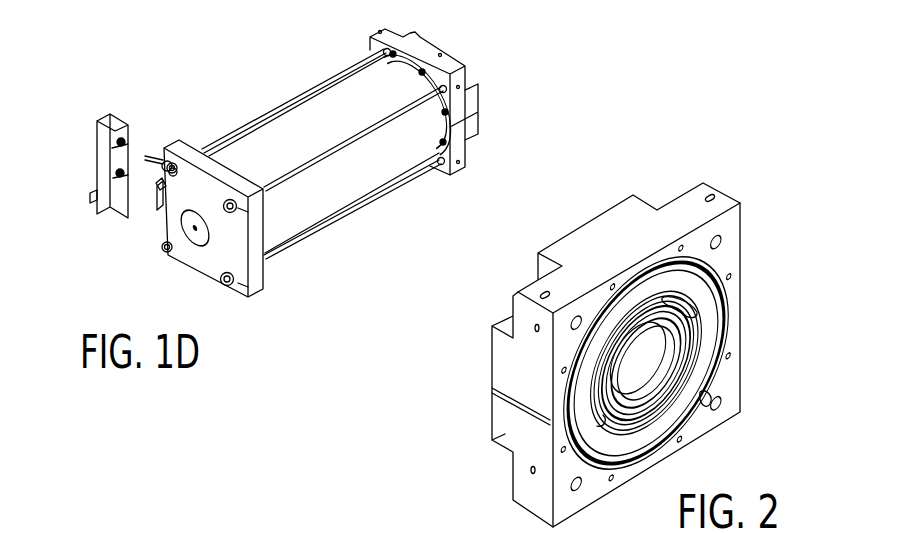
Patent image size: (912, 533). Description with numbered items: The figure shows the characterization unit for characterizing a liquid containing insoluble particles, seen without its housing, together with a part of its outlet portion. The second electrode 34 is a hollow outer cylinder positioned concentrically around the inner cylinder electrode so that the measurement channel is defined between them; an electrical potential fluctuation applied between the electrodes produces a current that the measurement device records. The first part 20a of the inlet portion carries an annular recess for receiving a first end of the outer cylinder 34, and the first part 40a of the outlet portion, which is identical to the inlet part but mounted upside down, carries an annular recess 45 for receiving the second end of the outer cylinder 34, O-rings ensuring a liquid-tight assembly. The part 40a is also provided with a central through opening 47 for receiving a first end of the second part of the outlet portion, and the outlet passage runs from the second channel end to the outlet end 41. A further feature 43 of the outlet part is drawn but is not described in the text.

In FIG. 1D, the first part of the inlet portion 20a is at (160, 218).
In FIG. 1D, the second electrode 34 is at (288, 125).
In FIG. 1D, the first part of the outlet portion 40a is at (430, 43).
In FIG. 2, the outlet end 41 is at (687, 318).
In FIG. 2, the inner race 43 is at (603, 407).
In FIG. 2, the annular recess 45 is at (722, 343).
In FIG. 2, the central through opening 47 is at (657, 370).